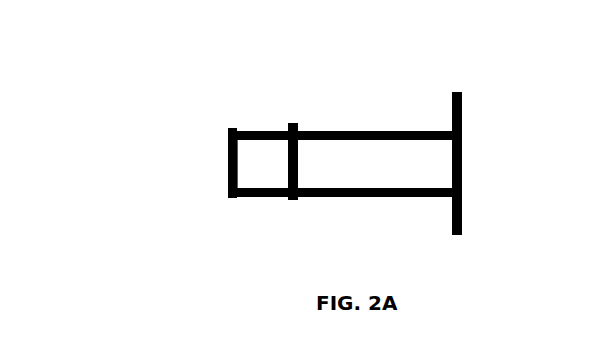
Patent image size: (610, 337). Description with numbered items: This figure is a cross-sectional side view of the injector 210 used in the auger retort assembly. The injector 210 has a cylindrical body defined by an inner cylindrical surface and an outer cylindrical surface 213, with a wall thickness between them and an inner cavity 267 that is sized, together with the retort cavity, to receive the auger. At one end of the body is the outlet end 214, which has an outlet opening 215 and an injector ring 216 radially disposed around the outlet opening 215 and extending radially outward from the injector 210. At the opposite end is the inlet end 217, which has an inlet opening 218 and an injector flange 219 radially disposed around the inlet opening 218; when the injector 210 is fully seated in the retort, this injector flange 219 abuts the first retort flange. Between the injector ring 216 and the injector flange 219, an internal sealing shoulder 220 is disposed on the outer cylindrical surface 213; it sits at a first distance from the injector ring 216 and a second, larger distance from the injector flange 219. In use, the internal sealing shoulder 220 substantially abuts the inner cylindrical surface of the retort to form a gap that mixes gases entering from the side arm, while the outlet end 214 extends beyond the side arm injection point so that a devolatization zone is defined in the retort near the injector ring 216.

The injector 210 is at (170, 74).
The outer cylindrical surface 213 is at (380, 198).
The outlet end 214 is at (206, 156).
The outlet opening 215 is at (238, 170).
The injector ring 216 is at (235, 199).
The inlet end 217 is at (500, 158).
The inlet opening 218 is at (461, 172).
The injector flange 219 is at (461, 222).
The internal sealing shoulder 220 is at (294, 201).
The inner cavity 267 is at (342, 185).